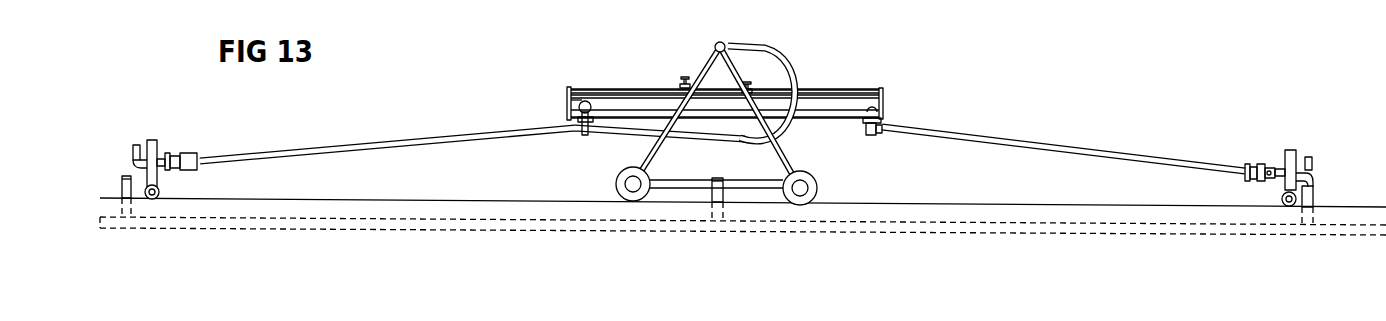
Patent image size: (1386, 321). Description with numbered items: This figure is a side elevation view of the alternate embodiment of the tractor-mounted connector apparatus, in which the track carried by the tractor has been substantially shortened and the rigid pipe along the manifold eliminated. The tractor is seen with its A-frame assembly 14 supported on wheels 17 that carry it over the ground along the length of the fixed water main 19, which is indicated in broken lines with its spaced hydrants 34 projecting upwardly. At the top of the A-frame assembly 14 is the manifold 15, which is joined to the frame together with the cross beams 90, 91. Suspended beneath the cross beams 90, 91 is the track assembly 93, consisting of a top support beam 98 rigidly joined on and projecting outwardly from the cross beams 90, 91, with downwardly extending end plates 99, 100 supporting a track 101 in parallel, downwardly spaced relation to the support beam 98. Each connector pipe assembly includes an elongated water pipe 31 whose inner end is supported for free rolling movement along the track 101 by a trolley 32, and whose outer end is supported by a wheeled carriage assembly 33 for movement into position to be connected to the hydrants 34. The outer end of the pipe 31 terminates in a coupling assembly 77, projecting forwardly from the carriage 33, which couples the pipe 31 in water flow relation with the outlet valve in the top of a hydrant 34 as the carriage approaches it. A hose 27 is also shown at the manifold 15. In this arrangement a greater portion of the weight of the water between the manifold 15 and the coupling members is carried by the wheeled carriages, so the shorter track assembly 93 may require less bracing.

The A-frame assembly 14 is at (795, 153).
The manifold 15 is at (719, 42).
The wheels 17 is at (616, 177).
The water main 19 is at (1262, 236).
The flexible hose 27 is at (771, 52).
The water pipe 31 is at (372, 143).
The trolley 32 is at (577, 116).
The wheeled carriage assembly 33 is at (163, 135).
The hydrants 34 is at (118, 186).
The coupling assembly 77 is at (131, 152).
The cross beam 90 is at (755, 84).
The cross beam 91 is at (683, 77).
The track assembly 93 is at (857, 77).
The top support beam 98 is at (817, 88).
The end plate 99 is at (884, 96).
The end plate 100 is at (566, 101).
The track 101 is at (612, 110).